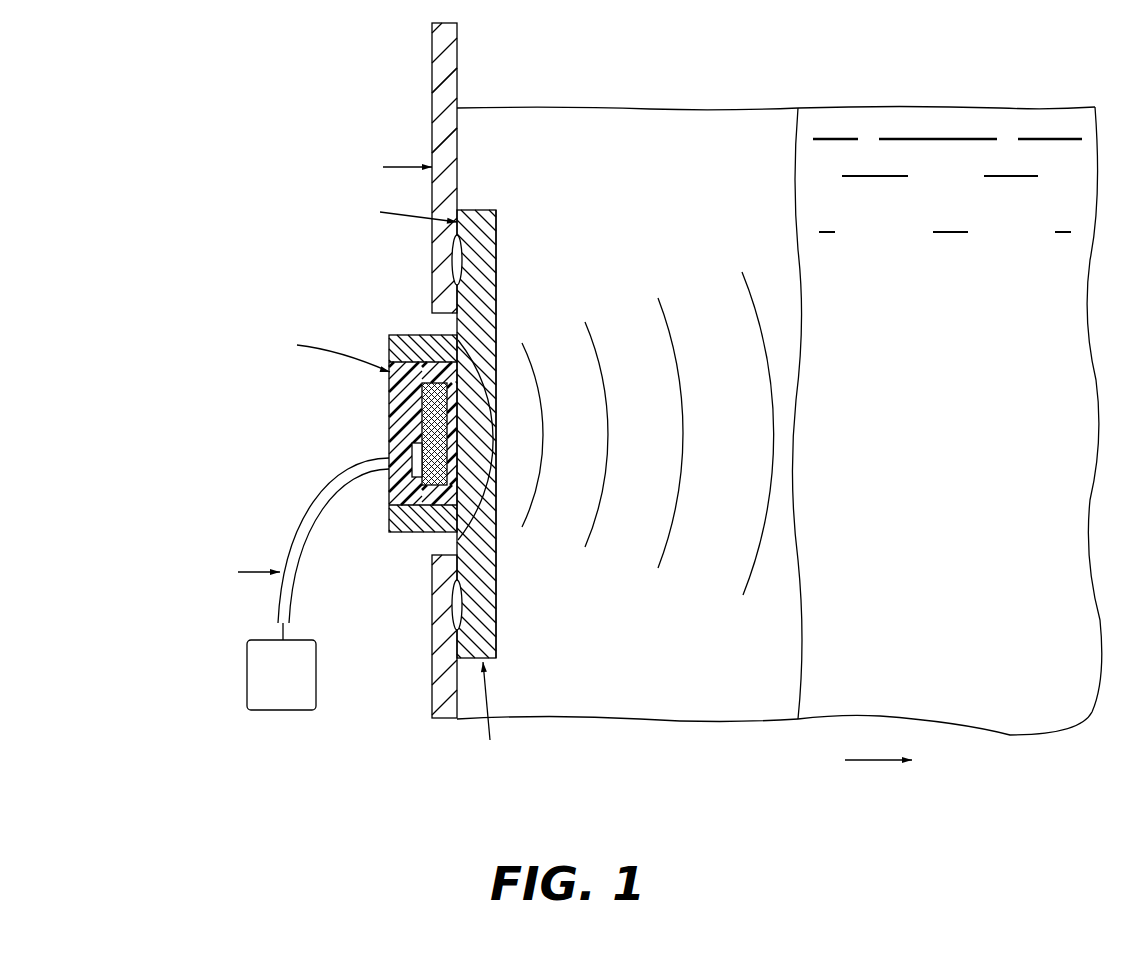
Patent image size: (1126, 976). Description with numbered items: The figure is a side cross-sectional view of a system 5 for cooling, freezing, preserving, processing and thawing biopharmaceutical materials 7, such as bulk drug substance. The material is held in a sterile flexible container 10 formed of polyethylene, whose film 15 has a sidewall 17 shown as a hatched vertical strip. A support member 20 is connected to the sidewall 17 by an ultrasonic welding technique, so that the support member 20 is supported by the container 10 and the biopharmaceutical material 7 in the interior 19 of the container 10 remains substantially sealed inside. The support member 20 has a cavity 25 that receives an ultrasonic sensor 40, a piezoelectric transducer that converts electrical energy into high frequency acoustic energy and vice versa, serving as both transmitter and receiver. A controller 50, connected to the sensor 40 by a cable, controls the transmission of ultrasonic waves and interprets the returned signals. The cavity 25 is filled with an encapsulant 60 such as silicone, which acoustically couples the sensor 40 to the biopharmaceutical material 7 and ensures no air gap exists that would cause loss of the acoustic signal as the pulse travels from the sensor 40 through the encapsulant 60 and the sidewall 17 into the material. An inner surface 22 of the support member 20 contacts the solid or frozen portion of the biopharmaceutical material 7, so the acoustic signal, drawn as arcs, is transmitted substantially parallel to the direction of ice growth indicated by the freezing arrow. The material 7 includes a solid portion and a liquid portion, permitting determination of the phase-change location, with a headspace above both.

The system 5 is at (113, 70).
The biopharmaceutical material 7 is at (652, 667).
The flexible container 10 is at (432, 50).
The film 15 is at (432, 91).
The sidewall 17 is at (432, 132).
The interior 19 is at (962, 667).
The support member 20 is at (487, 238).
The inner surface 22 is at (496, 595).
The cavity 25 is at (410, 397).
The ultrasonic sensor 40 is at (425, 495).
The controller 50 is at (300, 689).
The encapsulant 60 is at (413, 428).